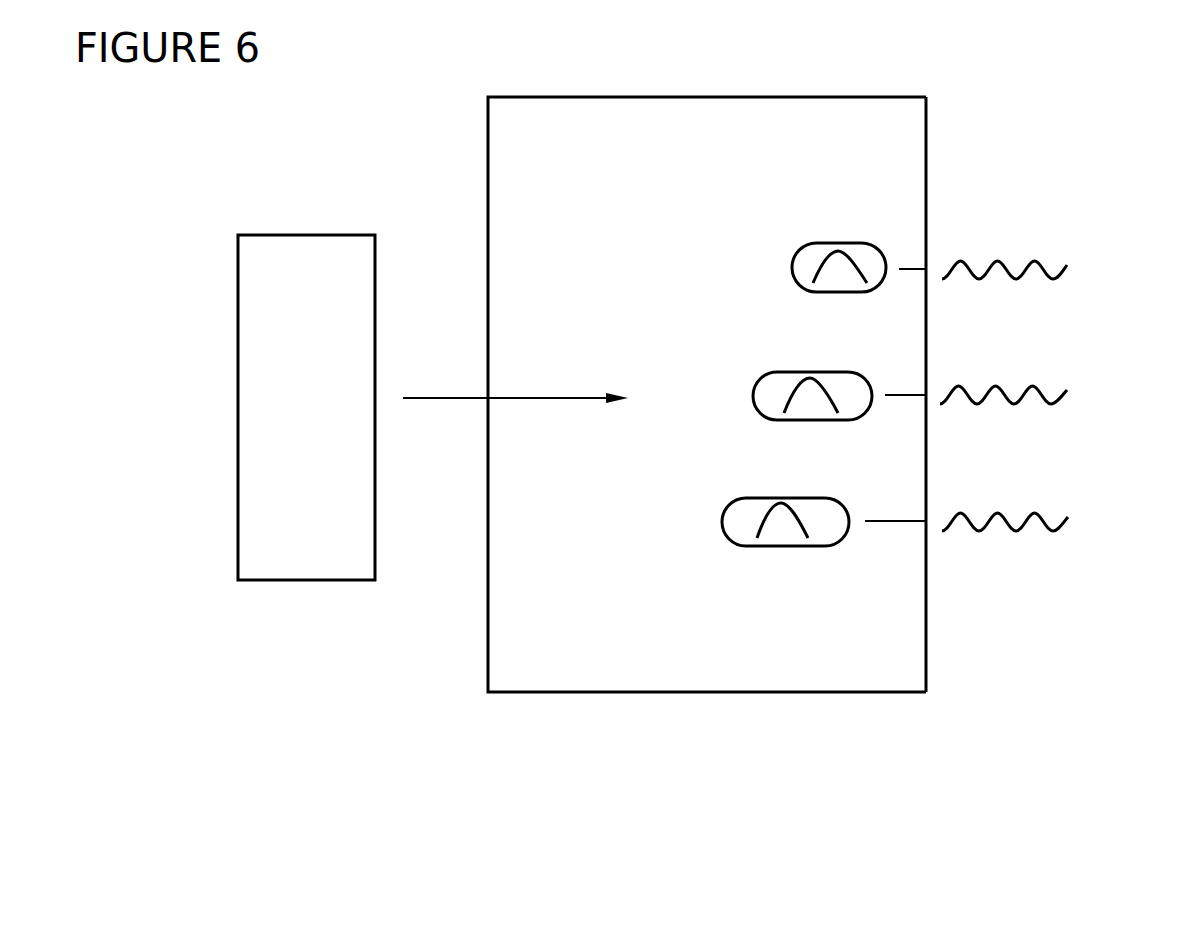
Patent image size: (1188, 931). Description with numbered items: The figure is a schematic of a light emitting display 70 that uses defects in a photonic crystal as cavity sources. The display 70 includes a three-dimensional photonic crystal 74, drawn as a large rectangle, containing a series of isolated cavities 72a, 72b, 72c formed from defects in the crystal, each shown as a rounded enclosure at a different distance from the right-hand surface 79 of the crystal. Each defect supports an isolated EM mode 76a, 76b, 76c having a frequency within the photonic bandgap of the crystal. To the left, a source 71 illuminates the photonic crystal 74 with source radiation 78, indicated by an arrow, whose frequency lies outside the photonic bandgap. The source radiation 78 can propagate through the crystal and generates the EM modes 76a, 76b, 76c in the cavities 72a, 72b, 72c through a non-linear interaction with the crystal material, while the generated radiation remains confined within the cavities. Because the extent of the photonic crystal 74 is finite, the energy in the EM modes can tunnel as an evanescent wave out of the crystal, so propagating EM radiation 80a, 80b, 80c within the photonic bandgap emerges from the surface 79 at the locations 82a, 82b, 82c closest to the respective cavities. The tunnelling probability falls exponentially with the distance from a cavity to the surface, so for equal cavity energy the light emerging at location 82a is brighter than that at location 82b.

The light emitting display 70 is at (829, 440).
The source 71 is at (317, 572).
The 3-D photonic crystal 74 is at (757, 354).
The source radiation 78 is at (560, 397).
The surface 79 is at (926, 634).
The cavity 72a is at (846, 231).
The cavity 72b is at (812, 363).
The cavity 72c is at (805, 491).
The EM mode 76a is at (856, 262).
The EM mode 76b is at (828, 372).
The EM mode 76c is at (800, 517).
The location 82a is at (926, 268).
The location 82b is at (928, 395).
The location 82c is at (928, 522).
The propagating EM radiation 80a is at (1067, 263).
The propagating EM radiation 80b is at (1068, 393).
The propagating EM radiation 80c is at (1070, 518).